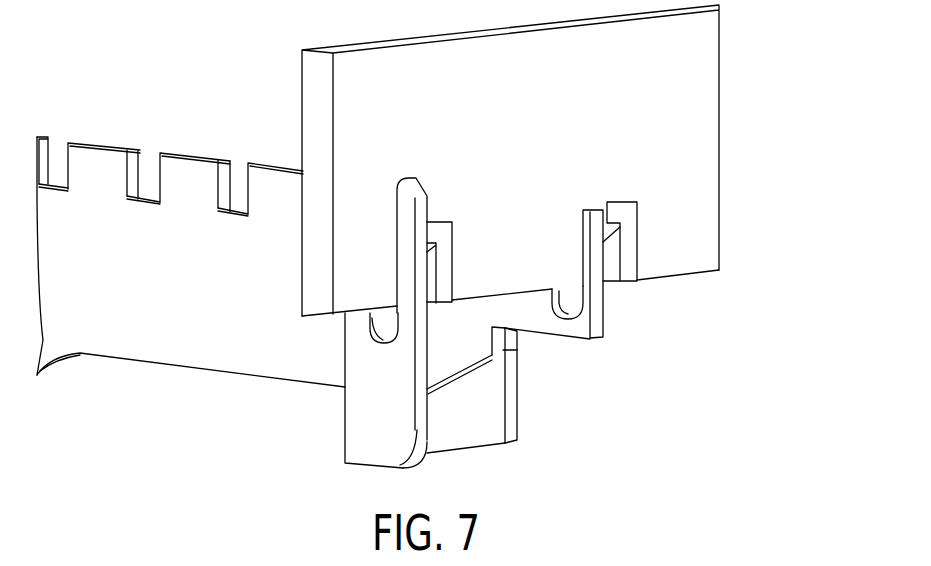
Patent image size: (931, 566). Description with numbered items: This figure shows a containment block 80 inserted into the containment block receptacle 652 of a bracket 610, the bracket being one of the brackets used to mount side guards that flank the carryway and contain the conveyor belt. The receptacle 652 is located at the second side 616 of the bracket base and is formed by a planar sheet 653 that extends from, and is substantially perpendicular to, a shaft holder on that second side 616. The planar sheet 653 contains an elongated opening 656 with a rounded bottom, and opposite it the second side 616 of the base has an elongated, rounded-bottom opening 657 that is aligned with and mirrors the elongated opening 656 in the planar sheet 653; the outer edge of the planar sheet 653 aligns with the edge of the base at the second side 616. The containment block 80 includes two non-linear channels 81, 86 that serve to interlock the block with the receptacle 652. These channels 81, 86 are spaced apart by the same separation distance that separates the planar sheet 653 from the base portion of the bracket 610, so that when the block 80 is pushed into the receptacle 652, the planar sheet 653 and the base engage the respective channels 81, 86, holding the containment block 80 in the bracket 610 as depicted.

The bracket 610 is at (125, 118).
The containment block 80 is at (752, 68).
The non-linear channel 81 is at (436, 222).
The non-linear channel 86 is at (627, 270).
The containment block receptacle 652 is at (538, 374).
The planar sheet 653 is at (373, 437).
The elongated opening 656 is at (378, 333).
The elongated rounded bottom opening 657 is at (557, 315).
The second side 616 is at (596, 322).